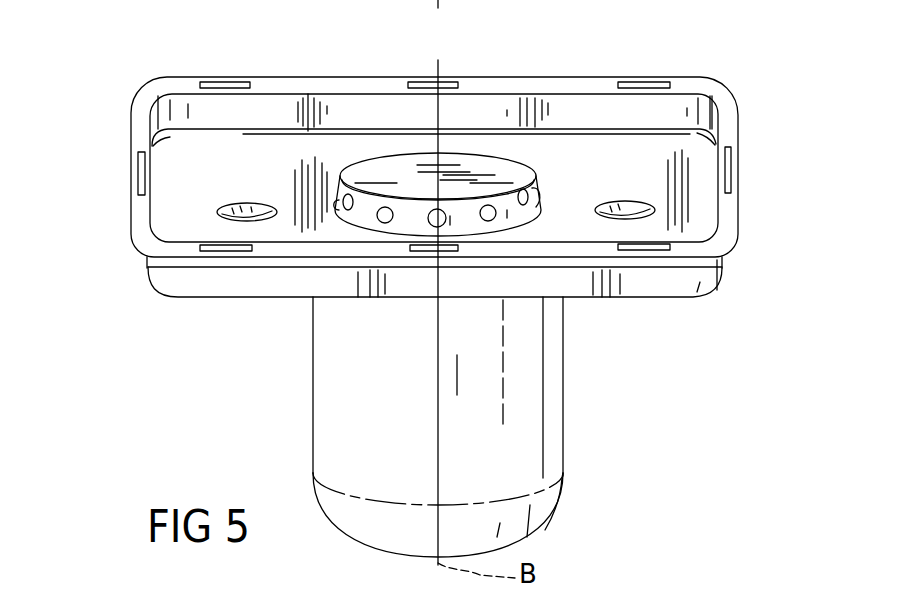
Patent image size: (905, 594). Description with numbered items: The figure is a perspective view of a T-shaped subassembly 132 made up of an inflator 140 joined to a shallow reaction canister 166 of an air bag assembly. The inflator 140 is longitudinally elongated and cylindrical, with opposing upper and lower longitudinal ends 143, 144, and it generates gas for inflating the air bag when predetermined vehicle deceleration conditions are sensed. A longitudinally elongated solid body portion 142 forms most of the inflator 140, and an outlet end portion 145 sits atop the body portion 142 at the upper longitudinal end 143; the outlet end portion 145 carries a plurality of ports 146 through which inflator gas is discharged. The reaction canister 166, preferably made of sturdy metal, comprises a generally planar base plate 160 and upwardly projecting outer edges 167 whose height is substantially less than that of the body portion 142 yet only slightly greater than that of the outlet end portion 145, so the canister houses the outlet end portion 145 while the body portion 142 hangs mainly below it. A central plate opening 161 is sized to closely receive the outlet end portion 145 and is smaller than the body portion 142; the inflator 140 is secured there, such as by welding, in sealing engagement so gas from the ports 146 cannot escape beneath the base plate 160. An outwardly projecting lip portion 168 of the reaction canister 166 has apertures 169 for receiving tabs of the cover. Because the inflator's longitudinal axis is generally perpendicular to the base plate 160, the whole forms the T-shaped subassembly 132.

The T-shaped subassembly 132 is at (110, 94).
The inflator 140 is at (582, 409).
The body portion 142 is at (563, 436).
The upper longitudinal end 143 is at (522, 170).
The lower longitudinal end 144 is at (544, 523).
The outlet end portion 145 is at (485, 160).
The ports 146 is at (432, 211).
The base plate 160 is at (243, 297).
The central plate opening 161 is at (533, 192).
The reaction canister 166 is at (163, 312).
The outer edges 167 is at (722, 265).
The lip portion 168 is at (722, 91).
The apertures 169 is at (202, 88).